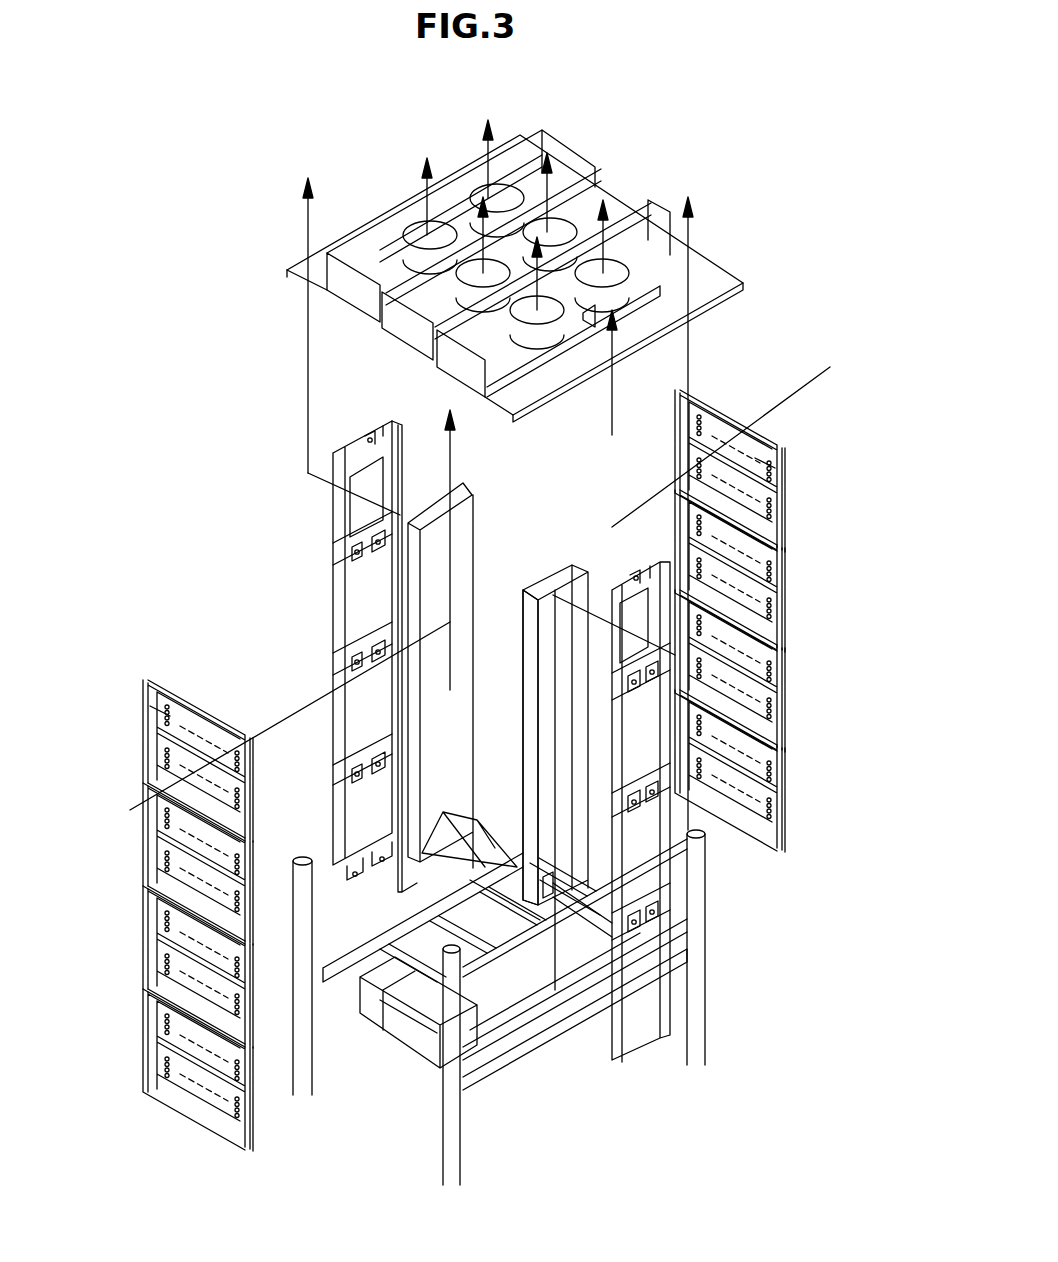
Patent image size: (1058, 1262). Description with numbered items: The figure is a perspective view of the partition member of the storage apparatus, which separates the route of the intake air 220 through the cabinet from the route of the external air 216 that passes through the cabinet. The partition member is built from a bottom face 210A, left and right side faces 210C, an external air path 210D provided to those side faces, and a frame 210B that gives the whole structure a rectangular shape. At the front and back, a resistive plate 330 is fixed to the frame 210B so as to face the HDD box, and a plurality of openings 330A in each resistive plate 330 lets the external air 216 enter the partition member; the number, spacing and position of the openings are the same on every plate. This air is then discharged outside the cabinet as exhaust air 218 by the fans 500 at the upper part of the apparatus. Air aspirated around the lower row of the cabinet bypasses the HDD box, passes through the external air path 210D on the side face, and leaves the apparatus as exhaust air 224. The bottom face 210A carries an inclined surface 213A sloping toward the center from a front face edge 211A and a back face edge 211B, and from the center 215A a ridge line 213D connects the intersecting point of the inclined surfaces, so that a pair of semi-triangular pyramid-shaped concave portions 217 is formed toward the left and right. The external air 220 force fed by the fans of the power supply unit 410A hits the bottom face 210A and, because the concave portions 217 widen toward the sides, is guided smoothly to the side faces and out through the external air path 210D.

The exhaust air 218 is at (485, 128).
The fans 500 is at (627, 312).
The exhaust air 224 is at (305, 352).
The resistive plate 330 is at (719, 422).
The external air 216 is at (800, 387).
The openings 330A is at (762, 470).
The bottom face 210A is at (400, 893).
The frame 210B is at (532, 627).
The left and right side faces 210C is at (467, 533).
The external air path 210D is at (563, 573).
The concave portions 217 is at (442, 798).
The inclined surface 213A is at (540, 860).
The ridge line 213D is at (480, 880).
The front face edge 211A is at (650, 920).
The back face edge 211B is at (540, 880).
The center of the bottom face 215A is at (510, 880).
The external air 220 is at (575, 995).
The power supply unit 410A is at (372, 1012).